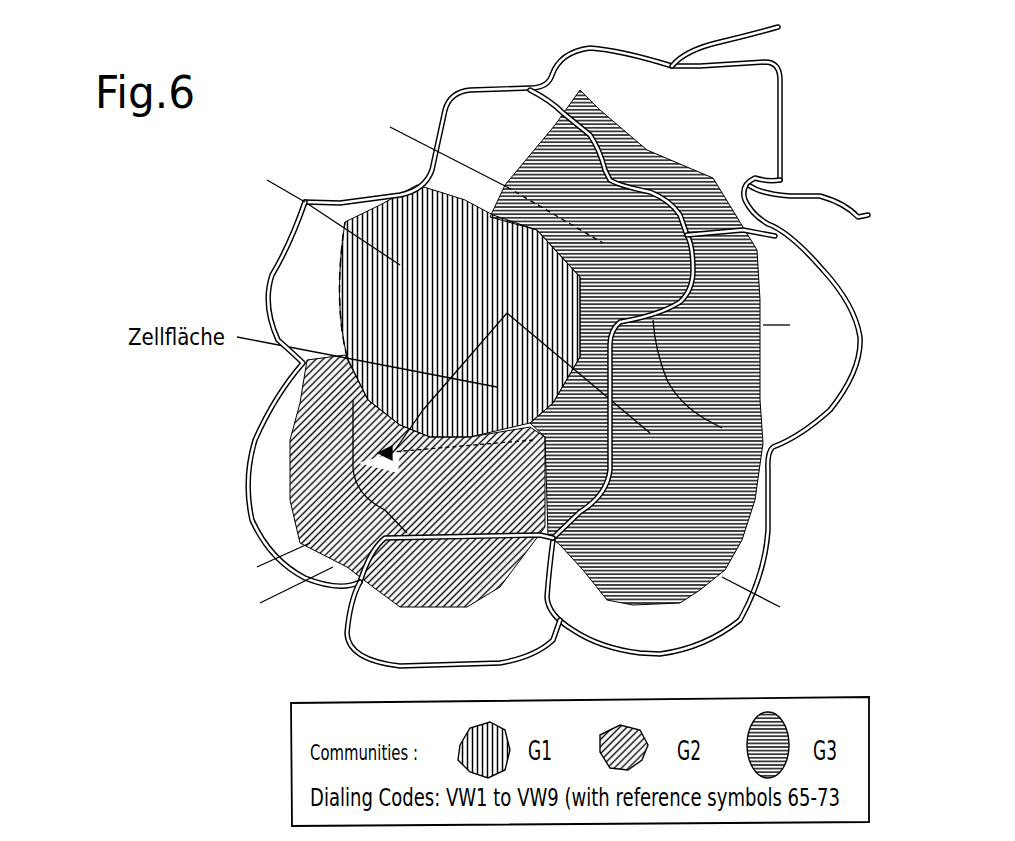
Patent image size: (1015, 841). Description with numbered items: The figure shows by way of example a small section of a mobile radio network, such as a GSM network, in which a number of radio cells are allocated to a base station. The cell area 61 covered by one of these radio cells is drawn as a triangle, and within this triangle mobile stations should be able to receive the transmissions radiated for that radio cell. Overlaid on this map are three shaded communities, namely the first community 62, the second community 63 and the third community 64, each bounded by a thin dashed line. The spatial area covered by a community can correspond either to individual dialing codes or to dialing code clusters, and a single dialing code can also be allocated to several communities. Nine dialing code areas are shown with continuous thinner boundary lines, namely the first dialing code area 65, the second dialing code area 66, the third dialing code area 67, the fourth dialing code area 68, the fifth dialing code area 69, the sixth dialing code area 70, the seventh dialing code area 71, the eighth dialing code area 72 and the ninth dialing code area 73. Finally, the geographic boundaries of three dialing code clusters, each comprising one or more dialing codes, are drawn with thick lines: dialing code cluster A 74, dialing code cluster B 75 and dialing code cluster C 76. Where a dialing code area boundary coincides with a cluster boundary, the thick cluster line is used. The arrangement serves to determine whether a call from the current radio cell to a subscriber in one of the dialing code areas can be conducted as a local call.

The cell area 61 is at (597, 335).
The community G1 62 is at (347, 263).
The community G2 63 is at (290, 488).
The community G3 64 is at (765, 345).
The dialing code area VW1 65 is at (472, 95).
The dialing code area VW2 66 is at (763, 143).
The dialing code area VW3 67 is at (490, 268).
The dialing code area VW4 68 is at (745, 231).
The dialing code area VW5 69 is at (757, 290).
The dialing code area VW6 70 is at (323, 443).
The dialing code area VW7 71 is at (375, 595).
The dialing code area VW8 72 is at (747, 533).
The dialing code area VW9 73 is at (517, 637).
The dialing code cluster A 74 is at (440, 100).
The dialing code cluster B 75 is at (790, 37).
The dialing code cluster C 76 is at (803, 433).